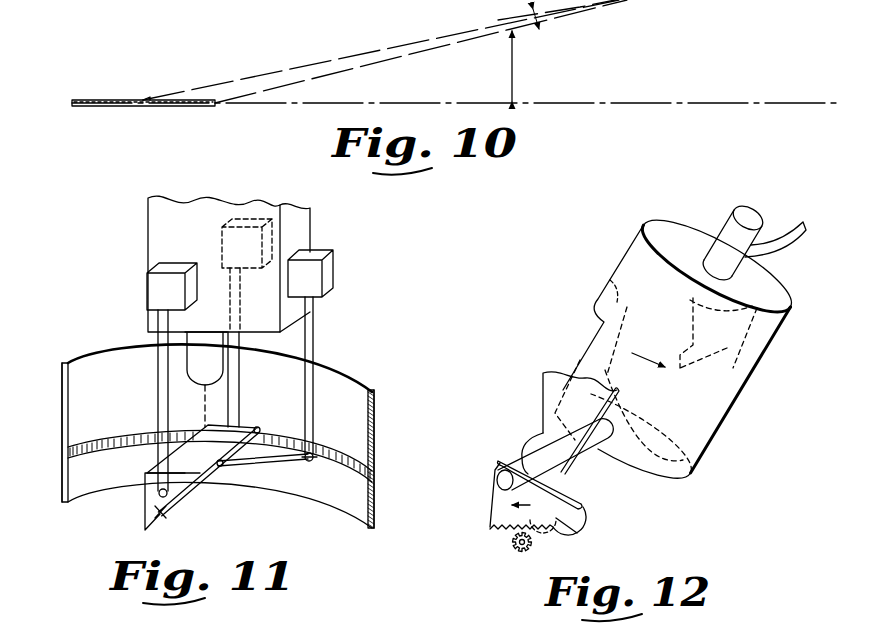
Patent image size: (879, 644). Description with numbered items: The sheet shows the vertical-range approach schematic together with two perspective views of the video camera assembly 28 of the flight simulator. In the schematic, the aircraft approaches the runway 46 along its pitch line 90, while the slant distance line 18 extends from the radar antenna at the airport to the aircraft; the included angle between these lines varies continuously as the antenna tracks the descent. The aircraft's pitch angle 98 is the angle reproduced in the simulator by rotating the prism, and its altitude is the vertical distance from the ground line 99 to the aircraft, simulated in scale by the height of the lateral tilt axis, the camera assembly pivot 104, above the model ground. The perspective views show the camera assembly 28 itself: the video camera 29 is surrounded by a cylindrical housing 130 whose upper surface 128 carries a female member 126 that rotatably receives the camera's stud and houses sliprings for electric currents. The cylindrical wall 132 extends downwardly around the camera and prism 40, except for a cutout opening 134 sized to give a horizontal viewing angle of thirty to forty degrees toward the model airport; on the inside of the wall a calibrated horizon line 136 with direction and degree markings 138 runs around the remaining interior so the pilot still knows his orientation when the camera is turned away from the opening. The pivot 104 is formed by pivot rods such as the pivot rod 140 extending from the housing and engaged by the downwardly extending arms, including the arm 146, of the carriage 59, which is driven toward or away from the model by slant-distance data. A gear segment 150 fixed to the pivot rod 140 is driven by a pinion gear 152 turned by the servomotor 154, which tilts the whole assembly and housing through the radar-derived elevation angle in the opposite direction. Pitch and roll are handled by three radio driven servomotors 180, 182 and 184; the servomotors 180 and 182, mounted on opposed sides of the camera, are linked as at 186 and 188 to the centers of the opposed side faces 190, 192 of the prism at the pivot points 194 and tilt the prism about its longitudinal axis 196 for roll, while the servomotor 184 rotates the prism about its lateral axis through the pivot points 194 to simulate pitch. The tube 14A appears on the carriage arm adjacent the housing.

In FIG. 12, the tube 14A is at (543, 402).
In FIG. 10, the slant distance line 18 is at (417, 42).
In FIG. 11, the camera assembly 28 is at (128, 241).
In FIG. 12, the camera assembly 28 is at (776, 394).
In FIG. 11, the video camera 29 is at (200, 212).
In FIG. 11, the prism 40 is at (186, 507).
In FIG. 10, the runway 46 is at (115, 99).
In FIG. 12, the carriage 59 is at (556, 369).
In FIG. 10, the pitch line 90 is at (467, 48).
In FIG. 10, the pitch angle 98 is at (518, 70).
In FIG. 10, the ground line 99 is at (585, 102).
In FIG. 12, the camera assembly pivot 104 is at (503, 468).
In FIG. 12, the female member 126 is at (775, 208).
In FIG. 12, the upper surface 128 is at (675, 230).
In FIG. 11, the cylindrical housing 130 is at (378, 420).
In FIG. 12, the cylindrical housing 130 is at (683, 315).
In FIG. 11, the cylindrical wall 132 is at (118, 355).
In FIG. 12, the cylindrical wall 132 is at (717, 420).
In FIG. 11, the cutout opening 134 is at (61, 418).
In FIG. 12, the cutout opening 134 is at (616, 298).
In FIG. 11, the calibrated horizon line 136 is at (137, 433).
In FIG. 11, the direction and degree markings 138 is at (135, 448).
In FIG. 12, the pivot rod 140 is at (592, 440).
In FIG. 12, the downwardly extending arm 146 is at (752, 340).
In FIG. 12, the gear segment 150 is at (492, 505).
In FIG. 12, the pinion gear 152 is at (515, 553).
In FIG. 12, the servomotor 154 is at (576, 536).
In FIG. 11, the servomotor 180 is at (146, 290).
In FIG. 11, the servomotor 182 is at (258, 222).
In FIG. 11, the servomotor 184 is at (324, 270).
In FIG. 11, the link 186 is at (158, 369).
In FIG. 11, the link 188 is at (241, 375).
In FIG. 11, the side face 190 is at (168, 511).
In FIG. 11, the side face 192 is at (253, 427).
In FIG. 11, the pivot points 194 is at (147, 496).
In FIG. 11, the longitudinal axis 196 is at (224, 465).